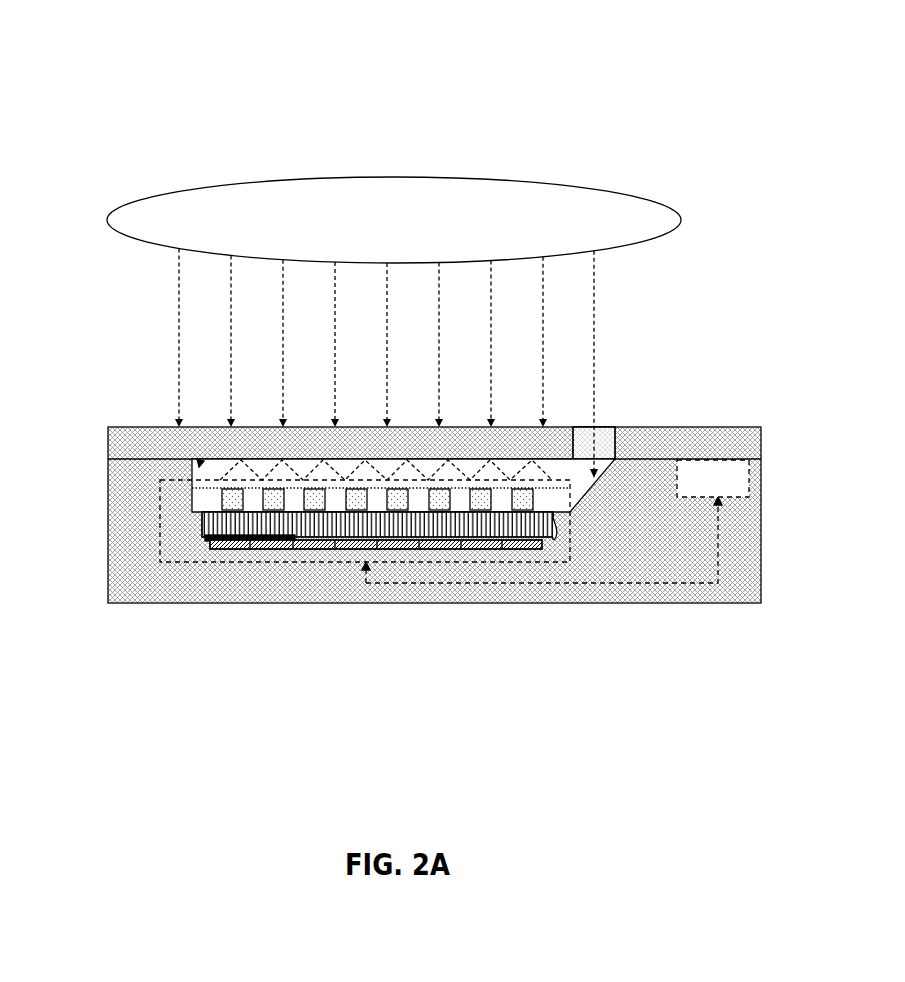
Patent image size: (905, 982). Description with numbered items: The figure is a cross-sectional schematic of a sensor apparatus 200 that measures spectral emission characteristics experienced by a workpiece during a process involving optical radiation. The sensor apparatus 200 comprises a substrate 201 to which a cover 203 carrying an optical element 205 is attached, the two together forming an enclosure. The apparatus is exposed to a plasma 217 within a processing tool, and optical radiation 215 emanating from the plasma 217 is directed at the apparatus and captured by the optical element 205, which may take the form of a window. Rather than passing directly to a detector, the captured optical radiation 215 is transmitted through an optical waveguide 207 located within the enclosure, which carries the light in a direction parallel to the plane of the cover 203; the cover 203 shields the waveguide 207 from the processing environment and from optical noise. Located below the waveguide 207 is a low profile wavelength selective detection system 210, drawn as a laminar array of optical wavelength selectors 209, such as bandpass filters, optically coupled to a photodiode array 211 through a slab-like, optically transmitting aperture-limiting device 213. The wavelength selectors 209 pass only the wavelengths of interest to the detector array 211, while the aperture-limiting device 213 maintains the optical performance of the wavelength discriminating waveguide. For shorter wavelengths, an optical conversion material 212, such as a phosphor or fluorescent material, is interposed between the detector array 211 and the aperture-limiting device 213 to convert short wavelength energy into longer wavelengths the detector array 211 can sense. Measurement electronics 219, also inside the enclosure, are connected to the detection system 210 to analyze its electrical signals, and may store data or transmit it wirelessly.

The sensor apparatus 200 is at (70, 42).
The substrate 201 is at (107, 575).
The cover 203 is at (762, 455).
The optical element 205 is at (604, 427).
The optical waveguide 207 is at (192, 463).
The optical wavelength selectors 209 is at (222, 500).
The low profile wavelength selective detection system 210 is at (160, 520).
The photodiode array 211 is at (213, 549).
The optical conversion material 212 is at (205, 541).
The aperture-limiting device 213 is at (557, 528).
The optical radiation 215 is at (596, 332).
The plasma 217 is at (681, 221).
The measurement electronics 219 is at (676, 480).